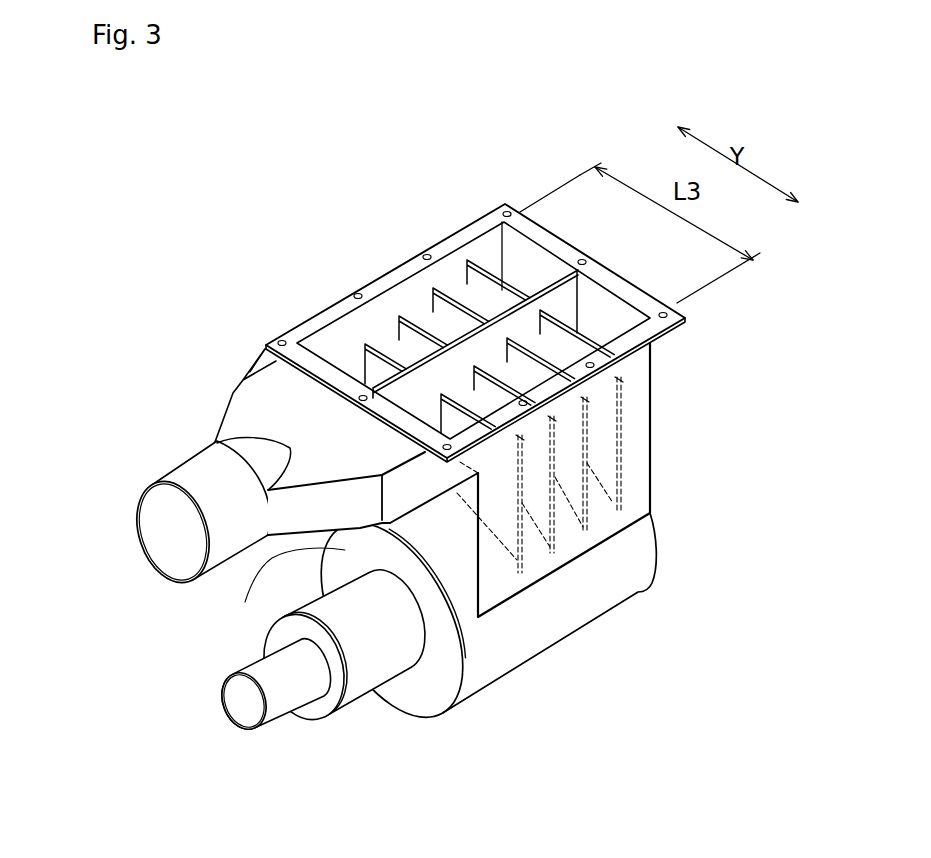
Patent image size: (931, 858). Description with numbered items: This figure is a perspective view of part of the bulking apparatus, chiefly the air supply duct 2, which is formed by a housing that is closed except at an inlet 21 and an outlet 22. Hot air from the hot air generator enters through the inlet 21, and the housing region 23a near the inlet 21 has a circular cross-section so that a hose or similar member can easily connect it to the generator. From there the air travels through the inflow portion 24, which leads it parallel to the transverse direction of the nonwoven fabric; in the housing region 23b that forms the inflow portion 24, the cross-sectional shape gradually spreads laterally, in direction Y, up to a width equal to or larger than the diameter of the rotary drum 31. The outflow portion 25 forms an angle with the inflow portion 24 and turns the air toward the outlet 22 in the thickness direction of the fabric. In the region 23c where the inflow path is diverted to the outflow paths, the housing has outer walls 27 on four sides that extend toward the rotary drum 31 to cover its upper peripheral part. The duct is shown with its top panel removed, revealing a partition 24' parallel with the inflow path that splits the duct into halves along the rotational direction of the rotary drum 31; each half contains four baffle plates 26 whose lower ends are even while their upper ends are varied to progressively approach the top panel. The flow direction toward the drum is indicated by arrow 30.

The air supply duct 2 is at (228, 350).
The inlet 21 is at (158, 553).
The outlet 22 is at (610, 497).
The region near the inlet 23a is at (101, 480).
The region forming the inflow portion 23b is at (143, 316).
The region where the inflow path is diverted 23c is at (680, 337).
The inflow portion 24 is at (416, 331).
The partition 24' is at (554, 201).
The outflow portion 25 is at (647, 577).
The baffle plates 26 is at (378, 365).
The outer walls 27 is at (637, 495).
The outlet pipe 30 is at (558, 674).
The rotary drum 31 is at (642, 553).